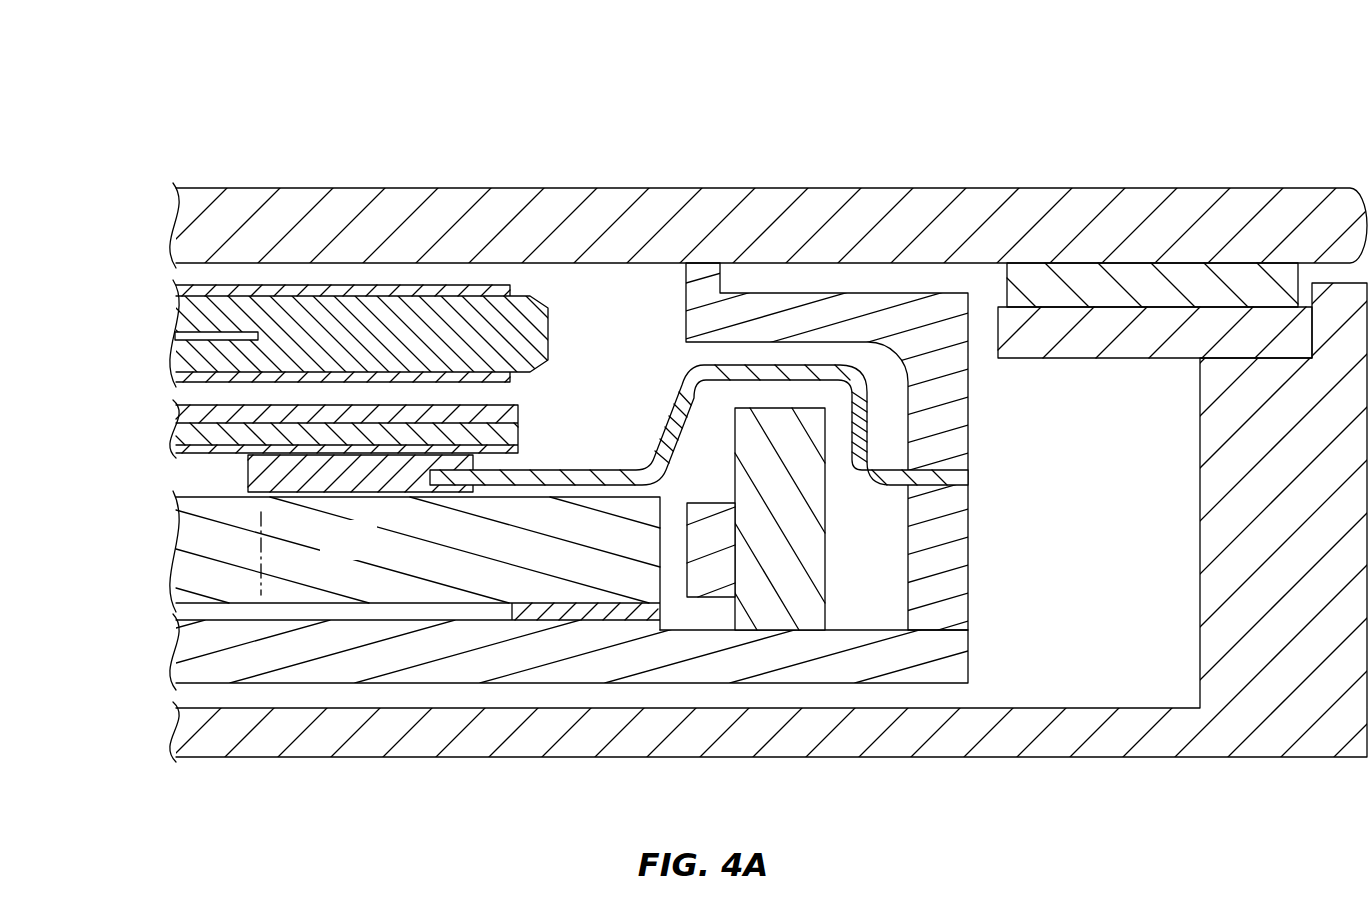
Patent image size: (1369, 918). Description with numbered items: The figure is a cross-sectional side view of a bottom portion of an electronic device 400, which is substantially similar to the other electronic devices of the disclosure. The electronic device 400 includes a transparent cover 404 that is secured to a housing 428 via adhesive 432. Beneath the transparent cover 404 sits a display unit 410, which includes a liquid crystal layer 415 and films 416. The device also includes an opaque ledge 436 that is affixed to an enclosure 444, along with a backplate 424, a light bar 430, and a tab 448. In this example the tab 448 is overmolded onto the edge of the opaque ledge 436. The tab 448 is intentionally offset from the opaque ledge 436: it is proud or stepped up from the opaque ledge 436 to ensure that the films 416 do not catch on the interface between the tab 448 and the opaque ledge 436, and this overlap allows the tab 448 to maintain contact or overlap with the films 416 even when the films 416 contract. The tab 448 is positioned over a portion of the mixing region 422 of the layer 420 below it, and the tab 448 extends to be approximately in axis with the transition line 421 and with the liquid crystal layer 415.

The electronic device 400 is at (993, 92).
The transparent cover 404 is at (758, 188).
The display unit 410 is at (112, 274).
The liquid crystal layer 415 is at (192, 332).
The films 416 is at (168, 434).
The substrate layer 420 is at (387, 560).
The transition line 421 is at (255, 580).
The mixing region 422 is at (369, 553).
The backplate 424 is at (205, 663).
The housing 428 is at (1290, 725).
The light bar 430 is at (700, 575).
The adhesive 432 is at (1137, 283).
The opaque ledge 436 is at (680, 398).
The enclosure 444 is at (930, 566).
The tab 448 is at (248, 472).